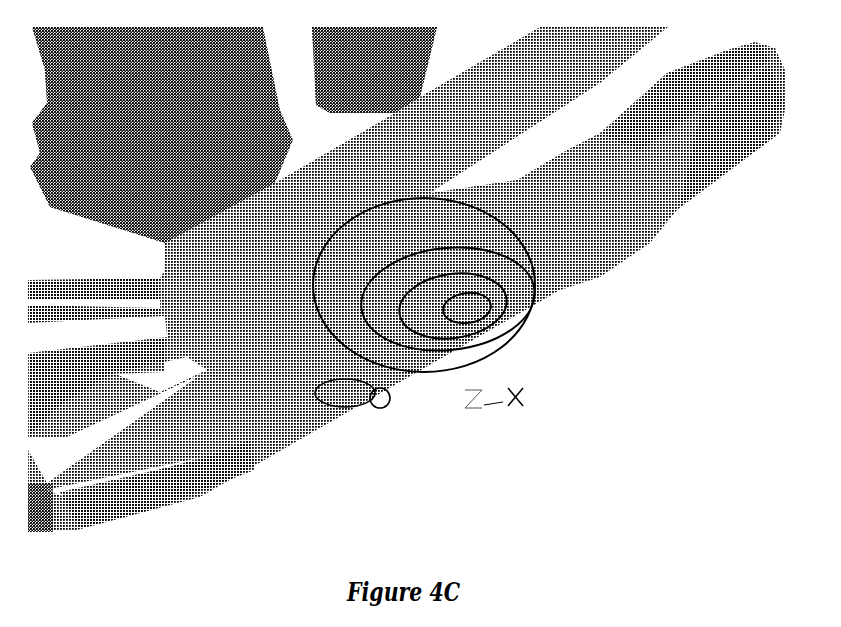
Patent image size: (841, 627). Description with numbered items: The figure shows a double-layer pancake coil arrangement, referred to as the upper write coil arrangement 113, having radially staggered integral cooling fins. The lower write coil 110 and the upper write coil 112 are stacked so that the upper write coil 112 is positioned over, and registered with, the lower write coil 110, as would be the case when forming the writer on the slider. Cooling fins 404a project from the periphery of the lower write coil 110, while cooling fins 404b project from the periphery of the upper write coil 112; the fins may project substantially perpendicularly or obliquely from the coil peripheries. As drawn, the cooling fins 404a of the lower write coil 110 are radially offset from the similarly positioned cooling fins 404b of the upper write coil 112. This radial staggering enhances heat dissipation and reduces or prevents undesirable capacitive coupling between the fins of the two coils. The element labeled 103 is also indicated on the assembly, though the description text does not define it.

The catheter device body 103 is at (512, 343).
The lower write coil 110 is at (390, 400).
The upper write coil 112 is at (352, 133).
The upper write coil arrangement 113 is at (304, 104).
The cooling fins of the lower write coil 404a is at (50, 280).
The cooling fins of the upper write coil 404b is at (58, 315).